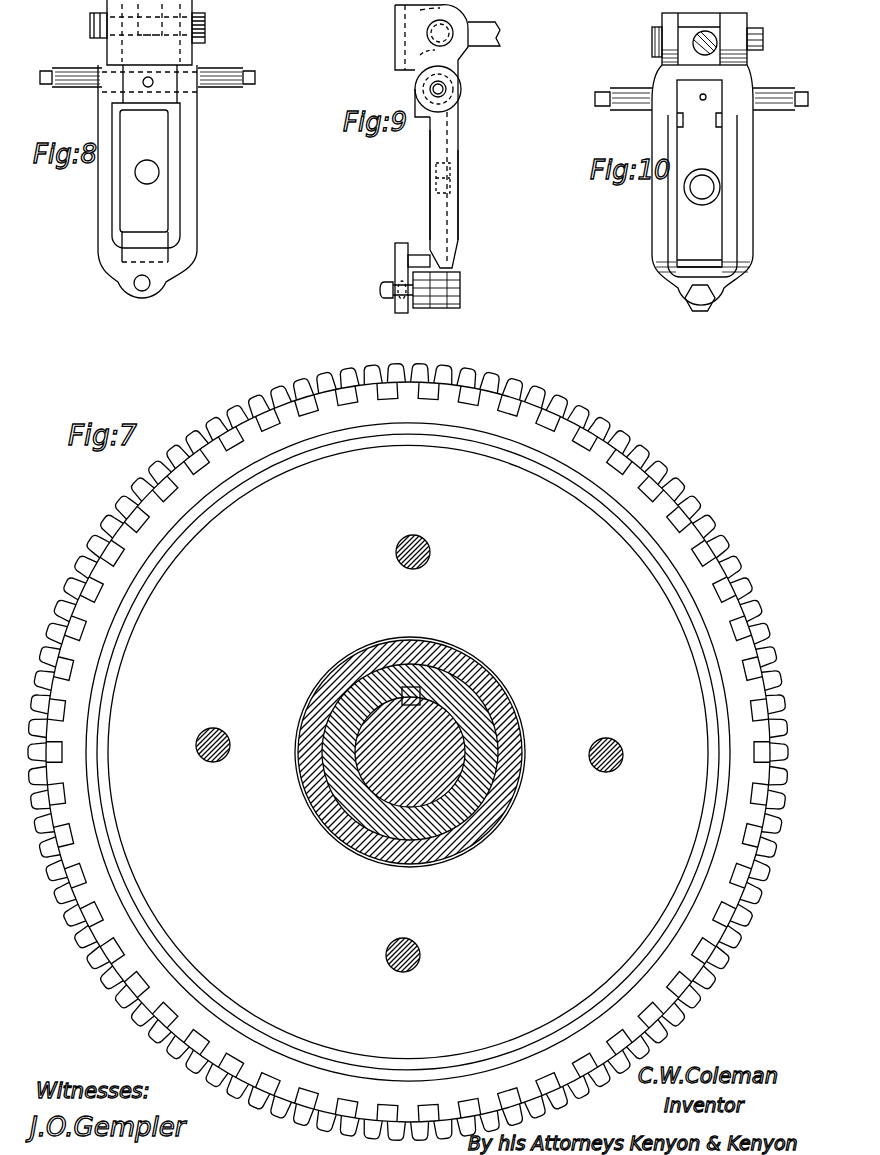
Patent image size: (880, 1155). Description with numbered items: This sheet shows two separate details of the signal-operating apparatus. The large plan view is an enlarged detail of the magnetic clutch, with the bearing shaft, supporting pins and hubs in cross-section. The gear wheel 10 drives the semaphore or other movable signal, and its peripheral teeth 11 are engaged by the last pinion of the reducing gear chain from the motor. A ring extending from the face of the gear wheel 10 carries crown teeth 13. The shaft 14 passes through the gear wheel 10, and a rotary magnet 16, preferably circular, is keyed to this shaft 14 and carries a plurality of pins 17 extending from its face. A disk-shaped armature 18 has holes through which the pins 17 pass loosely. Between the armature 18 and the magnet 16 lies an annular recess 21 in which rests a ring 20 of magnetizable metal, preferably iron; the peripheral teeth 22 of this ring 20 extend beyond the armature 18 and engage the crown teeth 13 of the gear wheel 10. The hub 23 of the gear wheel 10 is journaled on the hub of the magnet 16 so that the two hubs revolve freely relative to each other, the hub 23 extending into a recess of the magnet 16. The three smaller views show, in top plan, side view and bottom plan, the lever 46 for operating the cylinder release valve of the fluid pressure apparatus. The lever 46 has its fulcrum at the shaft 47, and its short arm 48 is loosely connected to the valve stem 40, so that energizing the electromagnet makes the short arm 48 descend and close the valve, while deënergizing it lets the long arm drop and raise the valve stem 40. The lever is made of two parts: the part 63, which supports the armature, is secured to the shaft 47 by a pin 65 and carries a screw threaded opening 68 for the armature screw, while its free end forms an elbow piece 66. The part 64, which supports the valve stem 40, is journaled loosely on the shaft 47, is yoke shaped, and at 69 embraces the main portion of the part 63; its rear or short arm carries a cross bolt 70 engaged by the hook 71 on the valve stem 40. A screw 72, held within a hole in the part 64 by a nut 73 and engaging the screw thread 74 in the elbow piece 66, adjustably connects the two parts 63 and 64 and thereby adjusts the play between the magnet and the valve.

In FIG. 7, the gear wheel 10 is at (449, 380).
In FIG. 7, the peripheral teeth 11 is at (408, 745).
In FIG. 7, the crown teeth 13 is at (408, 747).
In FIG. 7, the shaft 14 is at (445, 722).
In FIG. 7, the rotary magnet 16 is at (338, 766).
In FIG. 7, the pins 17 is at (417, 536).
In FIG. 7, the armature 18 is at (408, 751).
In FIG. 7, the ring of magnetizable metal 20 is at (409, 739).
In FIG. 7, the annular recess 21 is at (408, 752).
In FIG. 7, the peripheral teeth 22 is at (408, 731).
In FIG. 7, the hub 23 is at (335, 686).
In FIG. 9, the valve stem 40 is at (478, 28).
In FIG. 10, the valve stem 40 is at (703, 56).
In FIG. 8, the lever 46 is at (172, 175).
In FIG. 9, the lever 46 is at (414, 185).
In FIG. 10, the lever 46 is at (701, 196).
In FIG. 8, the fulcrum 47 is at (215, 82).
In FIG. 9, the fulcrum 47 is at (473, 184).
In FIG. 10, the fulcrum 47 is at (630, 96).
In FIG. 8, the short arm 48 is at (194, 4).
In FIG. 9, the short arm 48 is at (400, 50).
In FIG. 10, the short arm 48 is at (663, 58).
In FIG. 8, the part of the lever 63 is at (144, 171).
In FIG. 9, the part of the lever 63 is at (405, 248).
In FIG. 10, the part of the lever 63 is at (699, 173).
In FIG. 8, the part of the lever 64 is at (102, 68).
In FIG. 9, the part of the lever 64 is at (458, 62).
In FIG. 10, the part of the lever 64 is at (662, 78).
In FIG. 8, the pin 65 is at (145, 85).
In FIG. 9, the pin 65 is at (450, 88).
In FIG. 10, the pin 65 is at (706, 97).
In FIG. 8, the elbow piece 66 is at (130, 265).
In FIG. 9, the elbow piece 66 is at (398, 262).
In FIG. 10, the elbow piece 66 is at (695, 268).
In FIG. 8, the screw threaded opening 68 is at (150, 172).
In FIG. 9, the screw threaded opening 68 is at (452, 178).
In FIG. 10, the screw threaded opening 68 is at (706, 187).
In FIG. 8, the yoke portion 69 is at (98, 200).
In FIG. 9, the yoke portion 69 is at (458, 238).
In FIG. 10, the yoke portion 69 is at (652, 220).
In FIG. 8, the cross bolt 70 is at (206, 34).
In FIG. 9, the cross bolt 70 is at (432, 30).
In FIG. 10, the cross bolt 70 is at (765, 40).
In FIG. 9, the hook 71 is at (420, 24).
In FIG. 10, the hook 71 is at (712, 27).
In FIG. 9, the screw 72 is at (380, 290).
In FIG. 10, the screw 72 is at (705, 300).
In FIG. 9, the nut 73 is at (425, 308).
In FIG. 8, the screw thread 74 is at (146, 290).